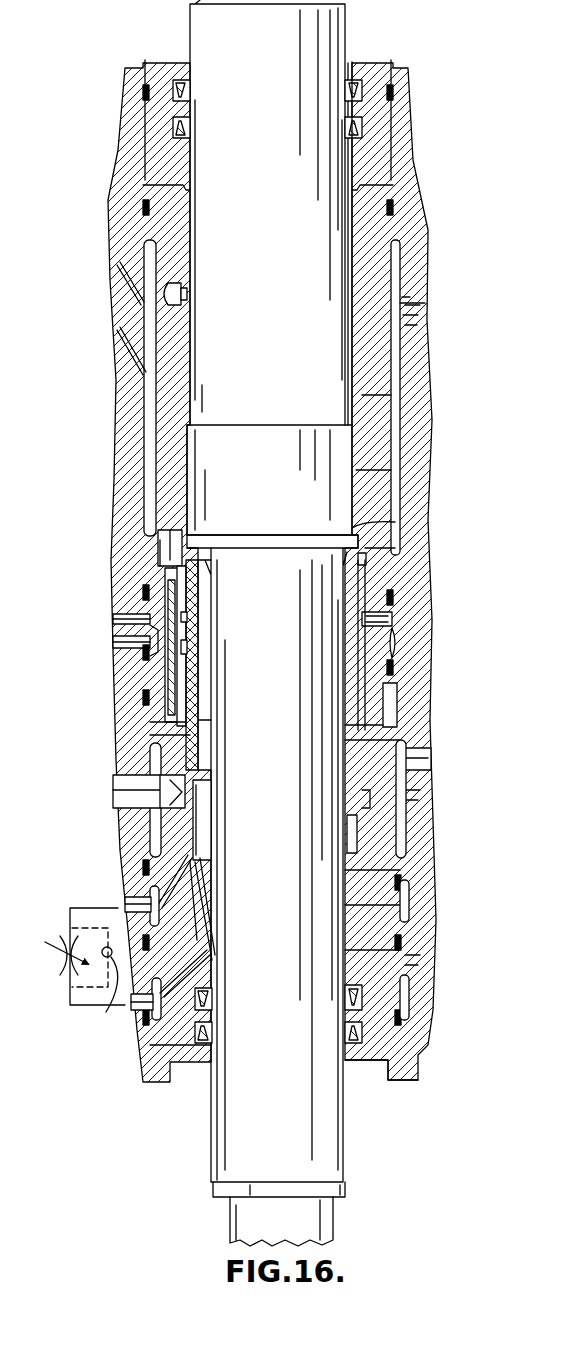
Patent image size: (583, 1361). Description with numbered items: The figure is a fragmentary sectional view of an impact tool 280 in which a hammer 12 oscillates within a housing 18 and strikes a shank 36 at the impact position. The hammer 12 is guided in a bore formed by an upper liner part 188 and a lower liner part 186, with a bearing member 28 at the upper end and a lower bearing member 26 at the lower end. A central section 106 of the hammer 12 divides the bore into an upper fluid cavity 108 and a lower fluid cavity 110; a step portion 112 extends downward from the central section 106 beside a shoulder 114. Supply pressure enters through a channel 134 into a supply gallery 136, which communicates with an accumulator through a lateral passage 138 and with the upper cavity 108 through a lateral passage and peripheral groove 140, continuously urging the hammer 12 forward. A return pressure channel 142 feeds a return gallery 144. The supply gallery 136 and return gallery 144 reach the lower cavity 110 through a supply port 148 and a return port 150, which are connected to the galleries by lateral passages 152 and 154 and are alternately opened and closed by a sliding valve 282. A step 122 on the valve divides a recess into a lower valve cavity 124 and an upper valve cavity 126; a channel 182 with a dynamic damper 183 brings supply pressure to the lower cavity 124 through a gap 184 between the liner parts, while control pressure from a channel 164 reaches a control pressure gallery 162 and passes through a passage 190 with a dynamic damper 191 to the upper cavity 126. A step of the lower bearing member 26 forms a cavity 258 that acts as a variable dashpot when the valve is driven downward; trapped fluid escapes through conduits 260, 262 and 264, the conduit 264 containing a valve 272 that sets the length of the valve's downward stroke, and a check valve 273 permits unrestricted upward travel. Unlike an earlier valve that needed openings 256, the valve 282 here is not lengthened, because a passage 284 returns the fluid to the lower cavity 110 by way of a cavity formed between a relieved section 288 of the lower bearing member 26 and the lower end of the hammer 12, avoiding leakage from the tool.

The impact tool 280 is at (166, 46).
The hammer 12 is at (332, 29).
The bearing member 28 is at (370, 72).
The housing 18 is at (402, 133).
The lateral passage and peripheral groove 140 is at (162, 284).
The channel 134 is at (118, 306).
The lateral passage 138 is at (425, 312).
The upper fluid cavity 108 is at (350, 358).
The supply gallery 136 is at (396, 390).
The upper liner part 188 is at (370, 435).
The central section of hammer 106 is at (335, 470).
The shoulder 114 is at (370, 528).
The supply port 148 is at (365, 560).
The lateral passages 152 is at (165, 552).
The channel 182 is at (170, 586).
The step portion 112 is at (295, 548).
The step of valve element 122 is at (195, 599).
The lower valve cavity 124 is at (195, 622).
The channel 164 is at (125, 623).
The valve 282 is at (195, 648).
The control pressure gallery 162 is at (152, 658).
The passage 190 is at (394, 622).
The dynamic damper 191 is at (385, 634).
The dynamic damper 183 is at (155, 660).
The gap 184 is at (172, 735).
The upper valve cavity 126 is at (188, 714).
The lower liner part 186 is at (400, 728).
The lateral passages 154 is at (175, 788).
The lower fluid cavity 110 is at (355, 776).
The return pressure channel 142 is at (175, 800).
The return gallery 144 is at (385, 798).
The return port 150 is at (368, 800).
The cavity 258 is at (197, 832).
The relieved section 288 is at (348, 832).
The conduit 260 is at (162, 895).
The openings 256 is at (212, 878).
The conduit 262 is at (137, 908).
The conduit 264 is at (70, 923).
The valve 272 is at (51, 960).
The passage 284 is at (185, 978).
The check valve 273 is at (106, 1017).
The lower bearing member 26 is at (372, 1060).
The shank 36 is at (325, 1222).